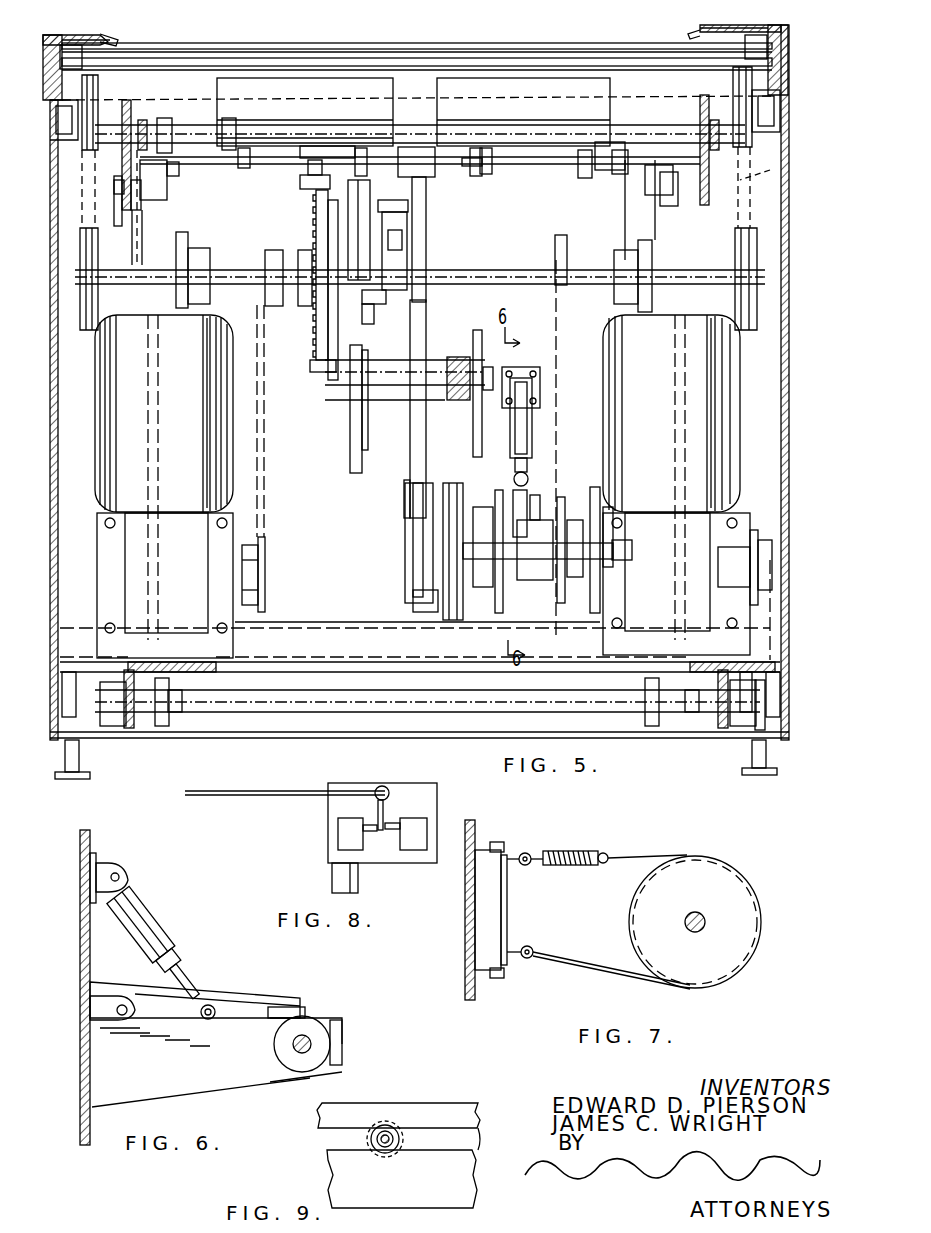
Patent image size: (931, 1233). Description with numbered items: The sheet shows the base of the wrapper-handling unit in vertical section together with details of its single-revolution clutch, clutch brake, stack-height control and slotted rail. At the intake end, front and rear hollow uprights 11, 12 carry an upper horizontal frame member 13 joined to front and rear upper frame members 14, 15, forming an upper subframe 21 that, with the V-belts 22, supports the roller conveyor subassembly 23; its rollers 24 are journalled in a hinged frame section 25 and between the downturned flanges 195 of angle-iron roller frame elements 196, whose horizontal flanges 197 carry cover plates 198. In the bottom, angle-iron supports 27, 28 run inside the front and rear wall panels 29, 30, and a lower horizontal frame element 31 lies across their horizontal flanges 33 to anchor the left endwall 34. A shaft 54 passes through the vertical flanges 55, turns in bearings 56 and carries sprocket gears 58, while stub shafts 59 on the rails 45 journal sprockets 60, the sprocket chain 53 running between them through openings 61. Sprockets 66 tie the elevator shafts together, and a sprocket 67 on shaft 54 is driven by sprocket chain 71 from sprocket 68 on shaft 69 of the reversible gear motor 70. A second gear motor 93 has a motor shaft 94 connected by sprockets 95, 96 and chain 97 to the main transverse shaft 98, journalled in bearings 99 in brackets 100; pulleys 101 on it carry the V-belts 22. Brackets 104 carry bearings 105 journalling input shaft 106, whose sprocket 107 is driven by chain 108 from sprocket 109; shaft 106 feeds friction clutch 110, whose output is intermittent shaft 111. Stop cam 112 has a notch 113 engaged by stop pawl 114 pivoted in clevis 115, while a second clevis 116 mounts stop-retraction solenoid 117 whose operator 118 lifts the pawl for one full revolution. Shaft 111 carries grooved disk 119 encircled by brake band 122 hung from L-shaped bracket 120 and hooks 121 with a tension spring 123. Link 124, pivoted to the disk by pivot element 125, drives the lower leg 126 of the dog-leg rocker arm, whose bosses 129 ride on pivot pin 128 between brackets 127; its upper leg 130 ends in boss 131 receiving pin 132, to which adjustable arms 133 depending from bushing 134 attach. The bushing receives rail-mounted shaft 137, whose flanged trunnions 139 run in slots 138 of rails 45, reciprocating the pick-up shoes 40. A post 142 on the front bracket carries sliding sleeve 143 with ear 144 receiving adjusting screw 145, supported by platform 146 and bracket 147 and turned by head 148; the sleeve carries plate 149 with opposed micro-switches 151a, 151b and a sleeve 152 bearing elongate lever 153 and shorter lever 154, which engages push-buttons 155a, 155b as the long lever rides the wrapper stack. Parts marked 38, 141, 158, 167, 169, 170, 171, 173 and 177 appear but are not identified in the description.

In FIG. 5, the front upright 11 is at (165, 232).
In FIG. 5, the rear upright 12 is at (628, 230).
In FIG. 5, the upper horizontal frame member 13 is at (622, 100).
In FIG. 5, the front upper horizontal frame member 14 is at (56, 128).
In FIG. 5, the rear upper horizontal frame member 15 is at (775, 130).
In FIG. 5, the upper subframe 21 is at (192, 78).
In FIG. 5, the V-belts 22 is at (125, 60).
In FIG. 5, the roller conveyor subassembly 23 is at (335, 43).
In FIG. 5, the rollers 24 is at (262, 43).
In FIG. 5, the hinged frame section 25 is at (90, 40).
In FIG. 5, the angle-iron support 27 is at (200, 672).
In FIG. 5, the angle-iron support 28 is at (690, 667).
In FIG. 5, the front wall panel 29 is at (50, 405).
In FIG. 5, the rear wall panel 30 is at (781, 450).
In FIG. 5, the lower horizontal frame element 31 is at (275, 628).
In FIG. 5, the horizontal flange 33 is at (175, 705).
In FIG. 6, the left endwall 34 is at (90, 1095).
In FIG. 7, the left endwall 34 is at (468, 960).
In FIG. 5, the leveling foot 38 is at (55, 752).
In FIG. 5, the pick-up shoes 40 is at (285, 164).
In FIG. 5, the rail 45 is at (115, 160).
In FIG. 9, the rail 45 is at (485, 1150).
In FIG. 5, the sprocket chain 53 is at (155, 385).
In FIG. 5, the shaft 54 is at (340, 690).
In FIG. 5, the vertical flange 55 is at (134, 728).
In FIG. 5, the bearings 56 is at (110, 718).
In FIG. 5, the sprocket gears 58 is at (175, 712).
In FIG. 5, the stub shafts 59 is at (114, 187).
In FIG. 5, the sprockets 60 is at (140, 205).
In FIG. 5, the openings 61 is at (158, 655).
In FIG. 5, the sprockets 66 is at (755, 690).
In FIG. 5, the sprocket 67 is at (770, 725).
In FIG. 5, the sprocket 68 is at (774, 545).
In FIG. 5, the motor shaft 69 is at (742, 555).
In FIG. 5, the reversible gear motor 70 is at (718, 408).
In FIG. 5, the sprocket chain 71 is at (775, 612).
In FIG. 5, the gear motor 93 is at (215, 445).
In FIG. 5, the motor shaft 94 is at (265, 568).
In FIG. 5, the sprocket 95 is at (264, 540).
In FIG. 5, the sprocket 96 is at (265, 290).
In FIG. 5, the chain 97 is at (264, 470).
In FIG. 5, the main transverse shaft 98 is at (492, 268).
In FIG. 5, the bearings 99 is at (188, 250).
In FIG. 5, the brackets 100 is at (210, 262).
In FIG. 5, the pulleys 101 is at (80, 300).
In FIG. 5, the brackets 104 is at (515, 490).
In FIG. 6, the brackets 104 is at (265, 1080).
In FIG. 5, the bearings 105 is at (488, 486).
In FIG. 5, the input shaft 106 is at (628, 560).
In FIG. 5, the sprocket 107 is at (561, 497).
In FIG. 5, the chain 108 is at (558, 335).
In FIG. 5, the sprocket 109 is at (560, 236).
In FIG. 5, the friction clutch 110 is at (540, 520).
In FIG. 6, the friction clutch 110 is at (320, 1020).
In FIG. 5, the intermittent shaft 111 is at (505, 600).
In FIG. 6, the intermittent shaft 111 is at (292, 1044).
In FIG. 7, the intermittent shaft 111 is at (686, 925).
In FIG. 5, the single-revolution stop cam 112 is at (548, 570).
In FIG. 6, the single-revolution stop cam 112 is at (342, 1032).
In FIG. 6, the notch 113 is at (306, 1012).
In FIG. 5, the stop pawl 114 is at (535, 495).
In FIG. 6, the stop pawl 114 is at (227, 1008).
In FIG. 6, the clevis 115 is at (108, 1005).
In FIG. 5, the second clevis 116 is at (510, 368).
In FIG. 6, the second clevis 116 is at (100, 865).
In FIG. 5, the stop-retraction solenoid 117 is at (532, 410).
In FIG. 6, the stop-retraction solenoid 117 is at (140, 912).
In FIG. 5, the operator 118 is at (527, 465).
In FIG. 6, the operator 118 is at (192, 990).
In FIG. 5, the grooved disk 119 is at (452, 620).
In FIG. 7, the grooved disk 119 is at (735, 955).
In FIG. 7, the L-shaped bracket 120 is at (501, 915).
In FIG. 7, the hooks 121 is at (524, 853).
In FIG. 5, the brake band 122 is at (478, 507).
In FIG. 7, the brake band 122 is at (630, 860).
In FIG. 5, the tension spring 123 is at (412, 425).
In FIG. 7, the tension spring 123 is at (572, 850).
In FIG. 5, the link 124 is at (410, 560).
In FIG. 5, the pivot element 125 is at (413, 598).
In FIG. 5, the lower leg 126 is at (426, 455).
In FIG. 5, the brackets 127 is at (478, 330).
In FIG. 5, the pivot pin 128 is at (460, 358).
In FIG. 5, the bosses 129 is at (390, 362).
In FIG. 5, the upper leg 130 is at (426, 220).
In FIG. 5, the boss 131 is at (420, 155).
In FIG. 5, the pin 132 is at (468, 168).
In FIG. 5, the adjustable arms 133 is at (250, 155).
In FIG. 5, the bushing 134 is at (362, 150).
In FIG. 5, the rail-mounted shaft 137 is at (215, 125).
In FIG. 9, the rail-mounted shaft 137 is at (395, 1128).
In FIG. 5, the slots 138 is at (98, 95).
In FIG. 9, the slots 138 is at (438, 1135).
In FIG. 5, the flanged trunnions 139 is at (131, 125).
In FIG. 9, the flanged trunnions 139 is at (388, 1125).
In FIG. 5, the switch box 141 is at (308, 318).
In FIG. 8, the switch box 141 is at (415, 800).
In FIG. 5, the post 142 is at (374, 314).
In FIG. 5, the sleeve 143 is at (386, 296).
In FIG. 8, the sleeve 143 is at (340, 878).
In FIG. 5, the ear 144 is at (296, 278).
In FIG. 5, the threaded adjusting screw 145 is at (326, 222).
In FIG. 5, the platform 146 is at (318, 372).
In FIG. 5, the bracket 147 is at (305, 190).
In FIG. 5, the head 148 is at (312, 148).
In FIG. 5, the plate 149 is at (370, 200).
In FIG. 8, the micro-switch 151a is at (344, 830).
In FIG. 8, the micro-switch 151b is at (415, 845).
In FIG. 8, the sleeve 152 is at (380, 786).
In FIG. 5, the elongate lever 153 is at (408, 205).
In FIG. 8, the elongate lever 153 is at (255, 793).
In FIG. 5, the shorter lever 154 is at (407, 240).
In FIG. 8, the shorter lever 154 is at (378, 812).
In FIG. 8, the push-button 155a is at (370, 832).
In FIG. 8, the push-button 155b is at (393, 823).
In FIG. 5, the shaft end 158 is at (147, 130).
In FIG. 5, the housing 167 is at (270, 103).
In FIG. 5, the bracket 169 is at (225, 135).
In FIG. 5, the block 170 is at (180, 172).
In FIG. 5, the bracket 171 is at (114, 200).
In FIG. 5, the bearing 173 is at (167, 176).
In FIG. 5, the rail 177 is at (330, 138).
In FIG. 5, the downturned flanges 195 is at (50, 75).
In FIG. 5, the angle-iron roller frame elements 196 is at (55, 45).
In FIG. 5, the horizontal flanges 197 is at (80, 34).
In FIG. 5, the cover plates 198 is at (118, 40).